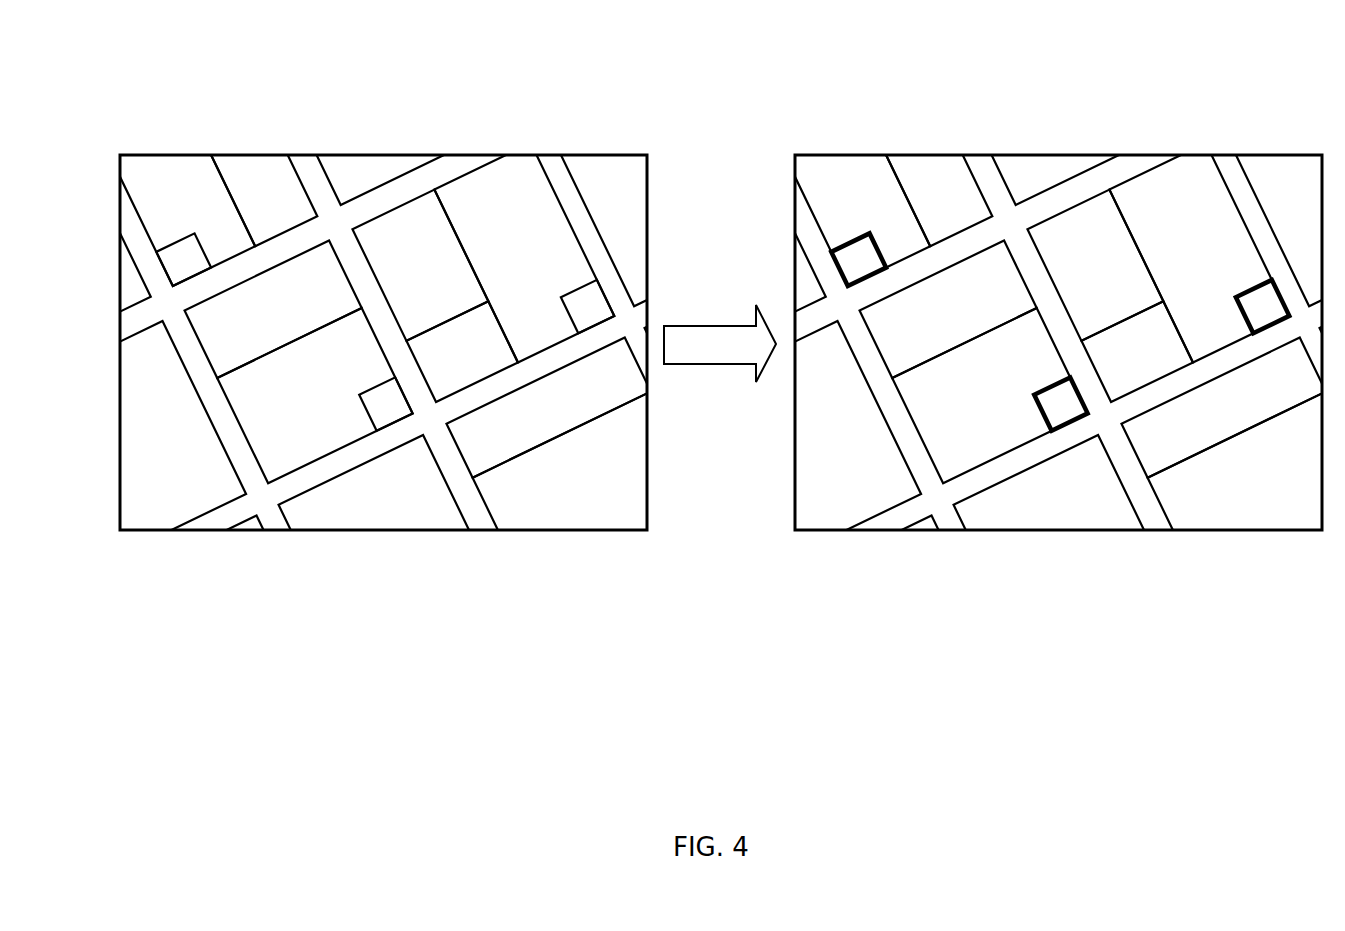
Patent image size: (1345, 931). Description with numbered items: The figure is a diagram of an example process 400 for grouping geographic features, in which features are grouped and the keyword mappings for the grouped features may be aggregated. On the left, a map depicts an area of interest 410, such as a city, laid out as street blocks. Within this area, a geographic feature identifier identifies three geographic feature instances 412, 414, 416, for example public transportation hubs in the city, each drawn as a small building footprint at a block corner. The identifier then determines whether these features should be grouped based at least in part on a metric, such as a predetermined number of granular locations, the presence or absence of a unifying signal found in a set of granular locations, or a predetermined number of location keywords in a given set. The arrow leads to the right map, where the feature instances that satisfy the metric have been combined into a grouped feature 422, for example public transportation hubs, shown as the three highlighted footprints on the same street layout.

The process for grouping features 400 is at (672, 458).
The area of interest 410 is at (527, 458).
The geographic feature instance 412 is at (178, 267).
The geographic feature instance 414 is at (395, 408).
The geographic feature instance 416 is at (642, 281).
The grouped feature 422 is at (1154, 126).